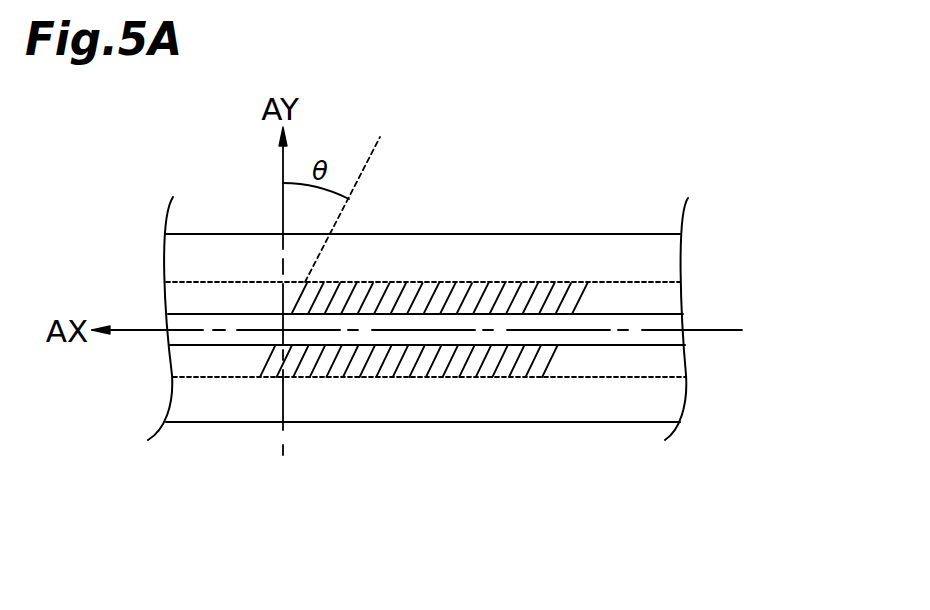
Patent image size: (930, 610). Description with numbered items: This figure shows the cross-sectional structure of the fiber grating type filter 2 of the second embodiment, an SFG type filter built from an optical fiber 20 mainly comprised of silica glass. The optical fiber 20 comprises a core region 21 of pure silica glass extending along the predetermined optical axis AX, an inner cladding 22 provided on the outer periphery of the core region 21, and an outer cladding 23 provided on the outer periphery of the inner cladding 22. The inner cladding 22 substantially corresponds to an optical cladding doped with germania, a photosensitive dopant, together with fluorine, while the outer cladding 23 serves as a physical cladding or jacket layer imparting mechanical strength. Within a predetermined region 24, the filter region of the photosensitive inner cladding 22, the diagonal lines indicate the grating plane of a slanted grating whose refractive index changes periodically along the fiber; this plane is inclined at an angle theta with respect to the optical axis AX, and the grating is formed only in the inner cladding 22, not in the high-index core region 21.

The fiber grating type filter 2 is at (633, 224).
The optical fiber 20 is at (505, 332).
The core region 21 is at (468, 322).
The inner cladding 22 is at (672, 300).
The outer cladding 23 is at (672, 254).
The predetermined region 24 is at (568, 428).